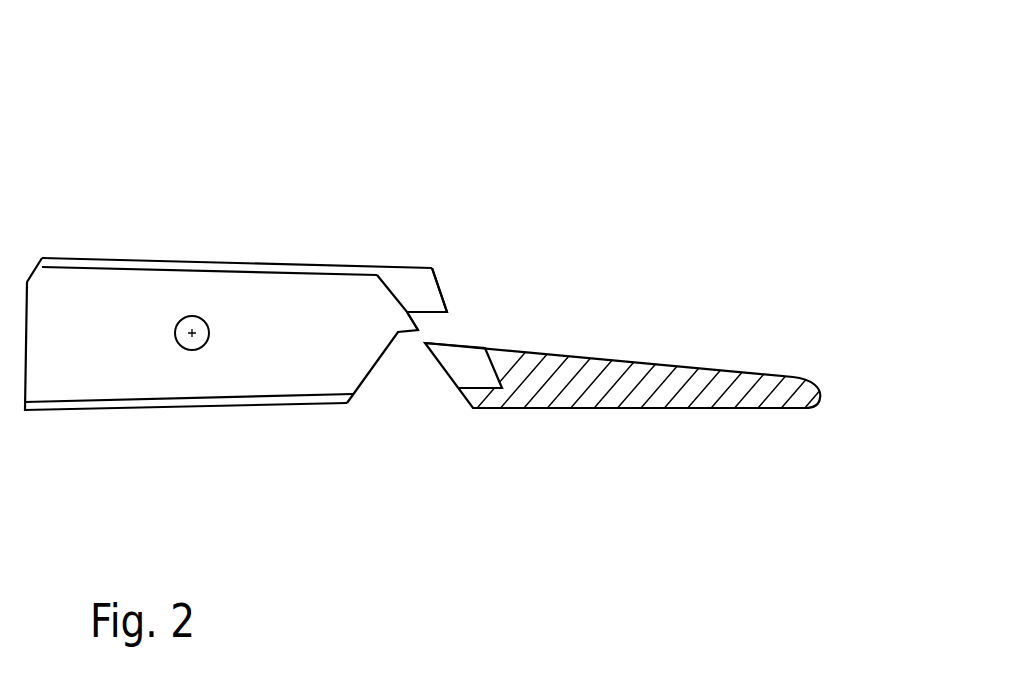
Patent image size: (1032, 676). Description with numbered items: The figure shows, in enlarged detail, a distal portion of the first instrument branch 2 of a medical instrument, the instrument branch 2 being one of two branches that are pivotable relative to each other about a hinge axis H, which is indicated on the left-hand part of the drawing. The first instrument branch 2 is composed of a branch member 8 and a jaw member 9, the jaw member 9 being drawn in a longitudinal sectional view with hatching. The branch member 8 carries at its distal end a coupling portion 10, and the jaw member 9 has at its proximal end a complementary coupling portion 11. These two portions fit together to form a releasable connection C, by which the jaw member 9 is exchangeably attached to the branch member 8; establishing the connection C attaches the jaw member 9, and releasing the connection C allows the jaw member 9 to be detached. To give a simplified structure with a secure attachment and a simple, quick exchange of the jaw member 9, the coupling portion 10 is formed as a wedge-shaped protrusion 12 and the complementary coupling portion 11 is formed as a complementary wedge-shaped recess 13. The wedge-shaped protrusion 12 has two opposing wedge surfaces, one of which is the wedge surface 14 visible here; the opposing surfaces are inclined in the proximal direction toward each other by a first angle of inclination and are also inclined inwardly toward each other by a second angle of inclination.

The first instrument branch 2 is at (485, 95).
The branch member 8 is at (178, 375).
The jaw member 9 is at (665, 362).
The coupling portion 10 is at (416, 240).
The wedge-shaped protrusion 12 is at (423, 240).
The complementary coupling portion 11 is at (501, 321).
The complementary wedge-shaped recess 13 is at (487, 318).
The wedge surface 14 is at (420, 310).
The hinge axis H is at (190, 330).
The releasable connection C is at (466, 262).